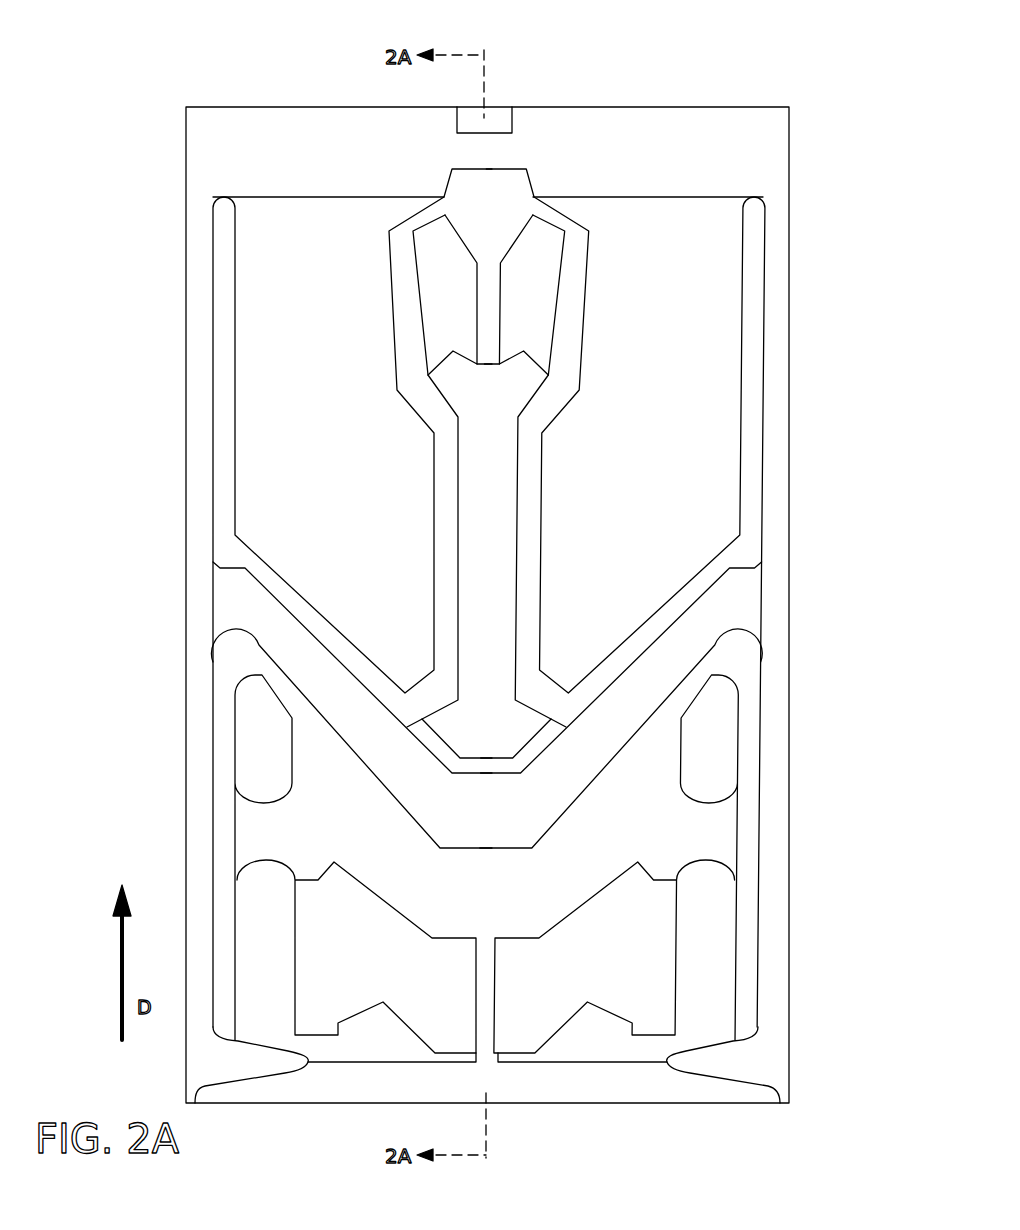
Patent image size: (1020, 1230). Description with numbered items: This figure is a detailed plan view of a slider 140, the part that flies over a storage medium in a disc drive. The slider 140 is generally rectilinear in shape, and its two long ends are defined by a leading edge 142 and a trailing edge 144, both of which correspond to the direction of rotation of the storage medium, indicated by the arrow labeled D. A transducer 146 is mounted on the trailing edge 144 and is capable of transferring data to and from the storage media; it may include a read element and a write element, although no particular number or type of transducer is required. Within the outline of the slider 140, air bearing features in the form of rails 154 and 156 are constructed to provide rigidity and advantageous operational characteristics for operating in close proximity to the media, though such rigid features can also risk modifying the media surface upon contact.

The slider 140 is at (694, 54).
The leading edge 142 is at (779, 1097).
The trailing edge 144 is at (757, 105).
The transducer 146 is at (492, 112).
The rail 154 is at (590, 1094).
The rail 156 is at (603, 125).